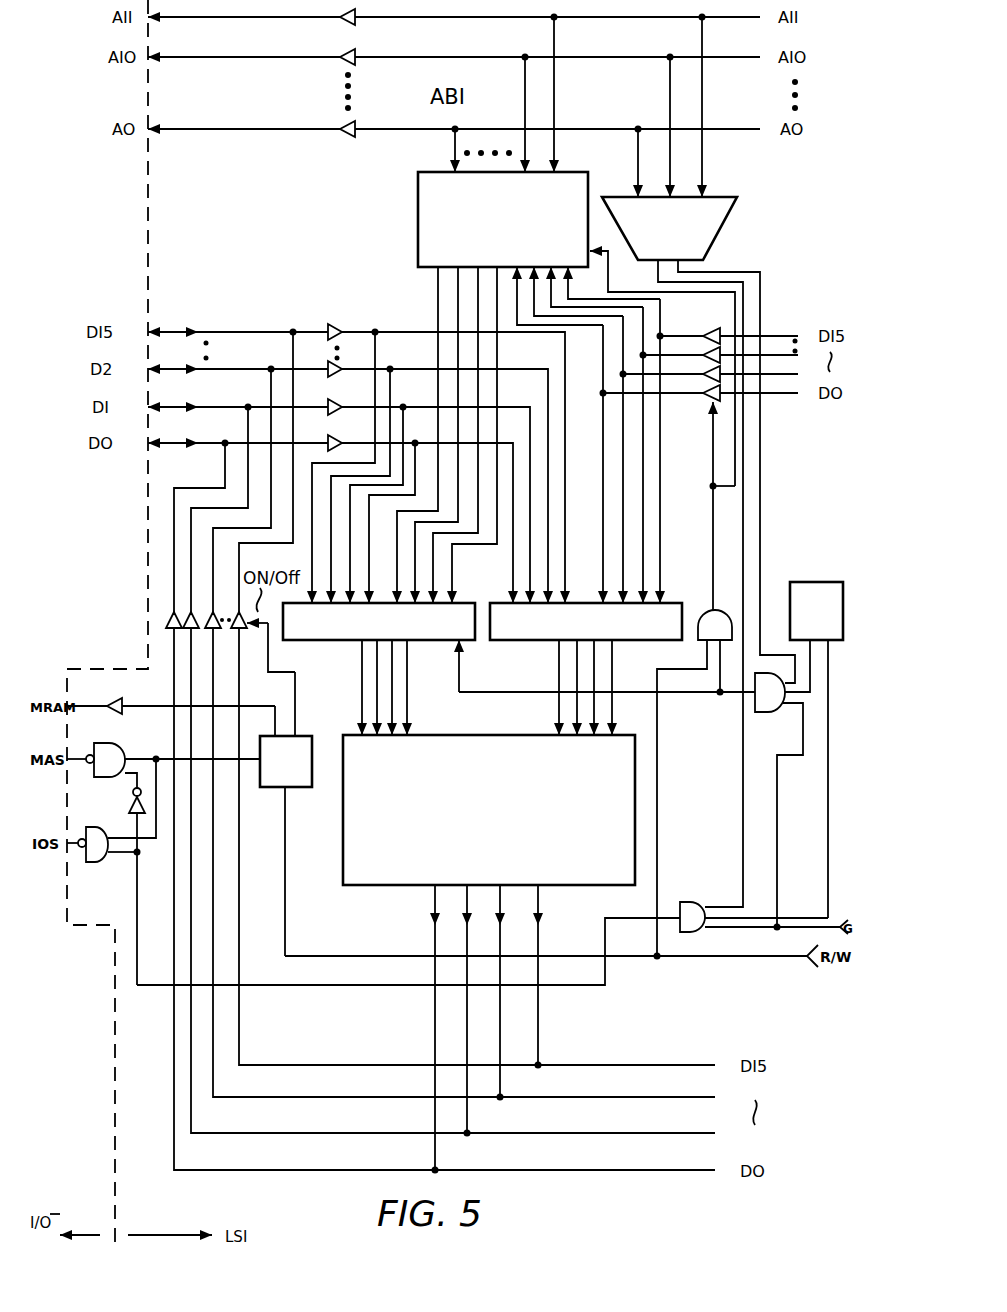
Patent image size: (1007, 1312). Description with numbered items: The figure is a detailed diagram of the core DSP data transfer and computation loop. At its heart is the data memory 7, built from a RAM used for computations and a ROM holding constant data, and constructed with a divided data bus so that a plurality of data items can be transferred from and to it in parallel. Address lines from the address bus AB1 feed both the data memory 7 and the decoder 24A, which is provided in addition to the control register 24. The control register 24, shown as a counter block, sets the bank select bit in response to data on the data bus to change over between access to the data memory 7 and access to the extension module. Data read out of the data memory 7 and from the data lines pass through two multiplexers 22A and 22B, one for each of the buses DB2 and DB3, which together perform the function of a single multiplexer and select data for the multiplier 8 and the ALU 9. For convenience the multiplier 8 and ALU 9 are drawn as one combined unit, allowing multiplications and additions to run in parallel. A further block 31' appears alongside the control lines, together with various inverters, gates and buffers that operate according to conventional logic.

The data memory 7 is at (418, 218).
The decoder 24A is at (724, 213).
The multiplexer 22A is at (325, 642).
The multiplexer 22B is at (673, 603).
The multiplier unit 8 is at (466, 691).
The arithmetic logic unit 9 is at (489, 810).
The control register 24 is at (806, 582).
The control register 31' is at (286, 761).